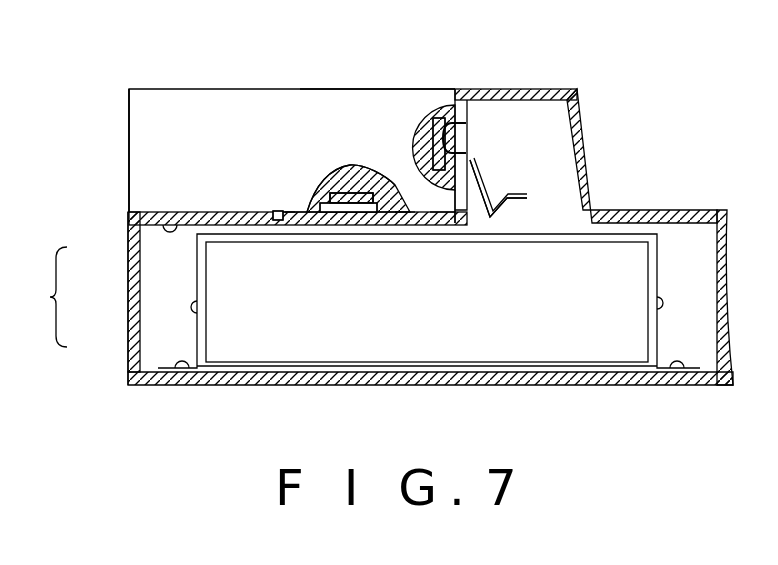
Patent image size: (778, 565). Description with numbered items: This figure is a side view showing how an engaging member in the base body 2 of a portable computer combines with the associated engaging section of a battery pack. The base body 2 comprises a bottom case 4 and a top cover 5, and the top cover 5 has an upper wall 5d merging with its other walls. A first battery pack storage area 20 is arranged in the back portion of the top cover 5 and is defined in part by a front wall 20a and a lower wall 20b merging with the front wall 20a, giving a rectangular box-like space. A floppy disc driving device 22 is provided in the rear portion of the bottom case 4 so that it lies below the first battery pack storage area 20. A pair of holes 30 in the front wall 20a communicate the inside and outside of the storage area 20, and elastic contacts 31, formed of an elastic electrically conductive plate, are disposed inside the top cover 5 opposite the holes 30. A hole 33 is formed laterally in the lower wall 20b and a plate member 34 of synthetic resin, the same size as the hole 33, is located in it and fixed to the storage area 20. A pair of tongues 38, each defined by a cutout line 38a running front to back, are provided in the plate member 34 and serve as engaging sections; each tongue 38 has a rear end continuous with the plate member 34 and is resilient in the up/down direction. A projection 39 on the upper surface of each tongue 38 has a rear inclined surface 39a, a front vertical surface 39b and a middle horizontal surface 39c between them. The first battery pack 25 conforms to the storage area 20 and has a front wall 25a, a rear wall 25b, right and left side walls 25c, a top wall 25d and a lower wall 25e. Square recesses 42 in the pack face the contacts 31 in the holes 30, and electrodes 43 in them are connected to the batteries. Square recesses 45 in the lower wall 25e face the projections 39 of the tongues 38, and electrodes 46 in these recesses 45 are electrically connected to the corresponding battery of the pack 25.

The base body 2 is at (46, 297).
The bottom case 4 is at (128, 341).
The top cover 5 is at (128, 266).
The upper wall 5d is at (570, 88).
The first battery pack storage area 20 is at (218, 206).
The front wall 20a is at (475, 97).
The lower wall 20b is at (128, 200).
The floppy disc driving device 22 is at (597, 335).
The first battery pack 25 is at (316, 88).
The front wall 25a is at (441, 118).
The rear wall 25b is at (128, 112).
The side walls 25c is at (185, 110).
The top wall 25d is at (360, 88).
The lower wall 25e is at (278, 208).
The holes 30 is at (480, 197).
The elastic contacts 31 is at (478, 178).
The hole 33 is at (443, 212).
The plate member 34 is at (407, 212).
The tongues 38 is at (297, 214).
The cutout line 38a is at (283, 225).
The projection 39 is at (352, 208).
The inclined surface 39a is at (340, 207).
The vertical surface 39b is at (383, 212).
The middle horizontal surface 39c is at (366, 192).
The square recesses 42 is at (450, 190).
The electrodes 43 is at (430, 140).
The square recesses 45 is at (322, 200).
The electrodes 46 is at (336, 192).